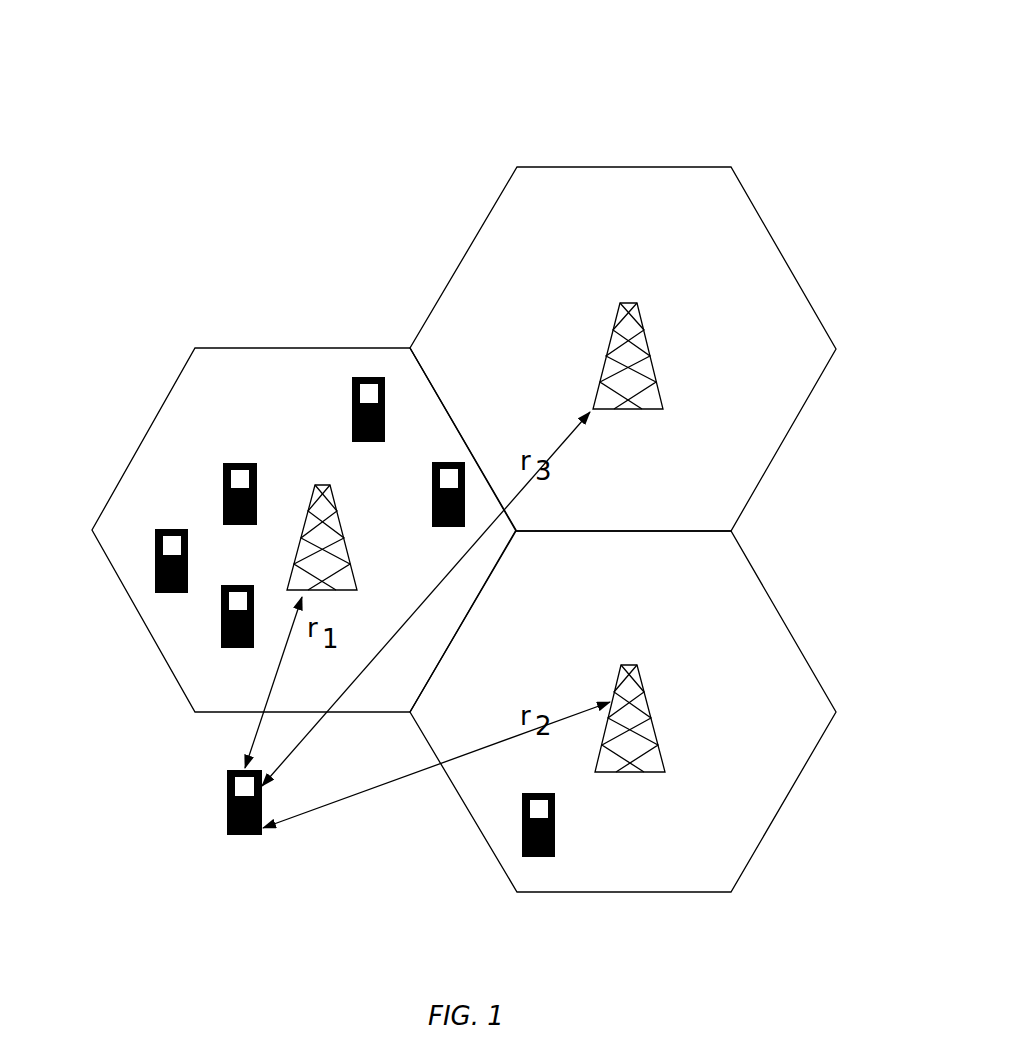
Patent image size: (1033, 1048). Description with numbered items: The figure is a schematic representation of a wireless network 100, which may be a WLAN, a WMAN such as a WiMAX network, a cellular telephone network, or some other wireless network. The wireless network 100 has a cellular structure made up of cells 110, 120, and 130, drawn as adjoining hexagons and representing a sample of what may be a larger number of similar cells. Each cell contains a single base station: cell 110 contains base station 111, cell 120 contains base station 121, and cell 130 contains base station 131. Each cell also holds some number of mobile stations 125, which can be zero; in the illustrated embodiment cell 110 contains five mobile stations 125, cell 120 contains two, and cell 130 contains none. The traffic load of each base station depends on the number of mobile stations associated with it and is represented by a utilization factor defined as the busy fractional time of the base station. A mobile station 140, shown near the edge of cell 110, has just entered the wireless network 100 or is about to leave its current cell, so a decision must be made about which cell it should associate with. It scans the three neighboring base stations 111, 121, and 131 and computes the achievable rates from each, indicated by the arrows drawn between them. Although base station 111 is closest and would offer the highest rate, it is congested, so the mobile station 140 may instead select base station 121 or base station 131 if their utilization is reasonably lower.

The wireless network 100 is at (740, 112).
The cell 110 is at (258, 427).
The cell 120 is at (595, 590).
The cell 130 is at (589, 227).
The base station 111 is at (322, 485).
The base station 121 is at (655, 726).
The base station 131 is at (630, 302).
The mobile station 125 is at (223, 502).
The mobile station 140 is at (245, 835).